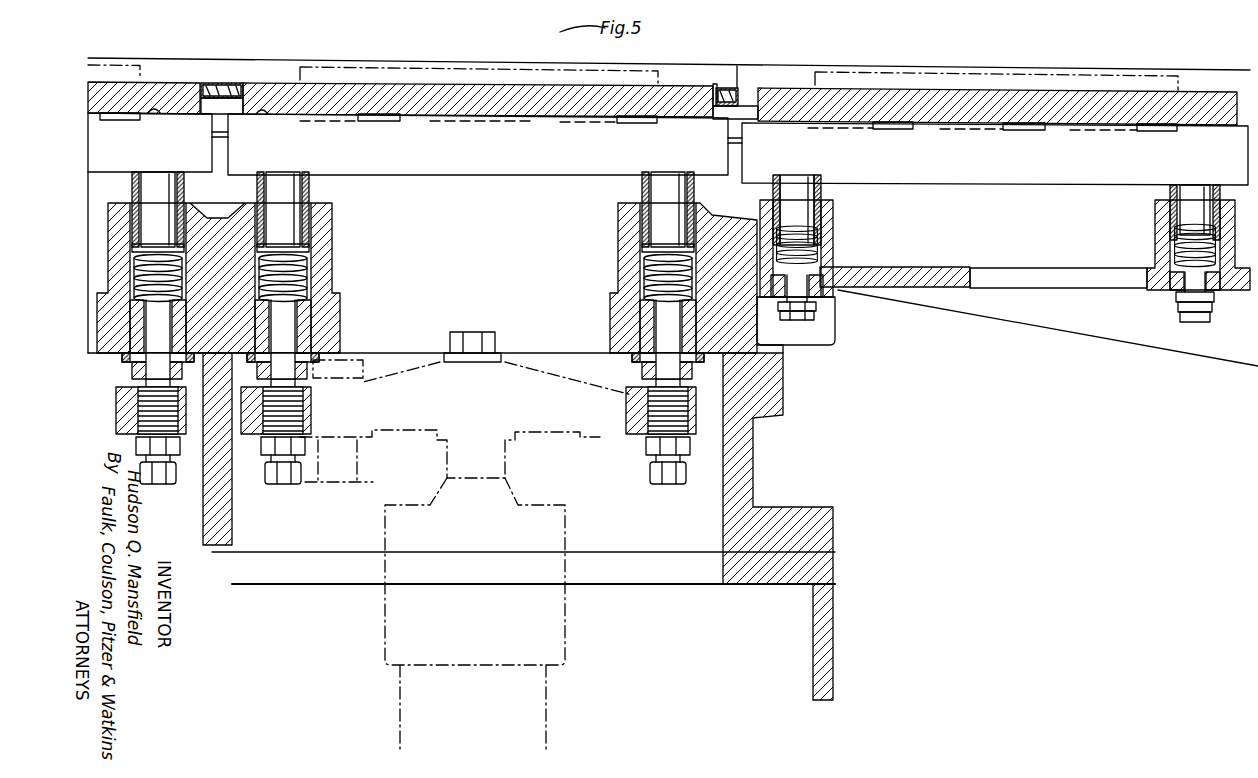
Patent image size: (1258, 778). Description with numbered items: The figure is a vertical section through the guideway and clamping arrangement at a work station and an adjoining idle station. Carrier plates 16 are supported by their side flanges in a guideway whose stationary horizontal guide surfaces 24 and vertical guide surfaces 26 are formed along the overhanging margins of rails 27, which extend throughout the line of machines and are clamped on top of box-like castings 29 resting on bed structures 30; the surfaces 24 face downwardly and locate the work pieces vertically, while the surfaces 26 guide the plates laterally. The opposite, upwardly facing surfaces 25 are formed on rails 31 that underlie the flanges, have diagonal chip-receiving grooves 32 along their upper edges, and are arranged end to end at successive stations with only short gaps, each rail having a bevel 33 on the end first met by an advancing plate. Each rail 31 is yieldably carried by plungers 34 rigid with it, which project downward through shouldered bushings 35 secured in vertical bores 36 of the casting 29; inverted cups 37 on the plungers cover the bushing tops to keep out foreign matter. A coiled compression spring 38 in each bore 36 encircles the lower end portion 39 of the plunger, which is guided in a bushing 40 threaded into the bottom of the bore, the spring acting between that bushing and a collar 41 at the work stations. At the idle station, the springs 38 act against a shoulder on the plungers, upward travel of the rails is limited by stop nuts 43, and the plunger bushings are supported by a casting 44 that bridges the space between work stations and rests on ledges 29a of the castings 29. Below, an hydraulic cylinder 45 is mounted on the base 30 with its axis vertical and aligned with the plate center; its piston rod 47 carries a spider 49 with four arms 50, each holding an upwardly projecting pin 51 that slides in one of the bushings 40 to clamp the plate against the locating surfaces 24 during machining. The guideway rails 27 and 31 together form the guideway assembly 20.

The carrier plate 16 is at (168, 75).
The plate assembly 20 is at (430, 66).
The horizontal guide surface 24 is at (214, 90).
The underlying surface 25 is at (156, 113).
The vertical guide surface 26 is at (230, 92).
The rail 27 is at (738, 68).
The box-like casting 29 is at (755, 452).
The ledge 29a is at (785, 372).
The bed structure 30 is at (838, 592).
The rail 31 is at (114, 166).
The chip-receiving groove 32 is at (126, 120).
The bevel 33 is at (222, 104).
The plunger 34 is at (145, 205).
The shouldered bushing 35 is at (118, 215).
The vertical bore 36 is at (332, 268).
The inverted cup 37 is at (186, 180).
The coiled compression spring 38 is at (135, 272).
The lower end portion of plunger 39 is at (178, 320).
The bushing 40 is at (122, 357).
The collar 41 is at (132, 246).
The stop nut 43 is at (800, 318).
The casting 44 is at (926, 290).
The hydraulic cylinder 45 is at (400, 700).
The piston rod 47 is at (447, 467).
The spider 49 is at (448, 358).
The spider arm 50 is at (112, 425).
The pin 51 is at (135, 375).